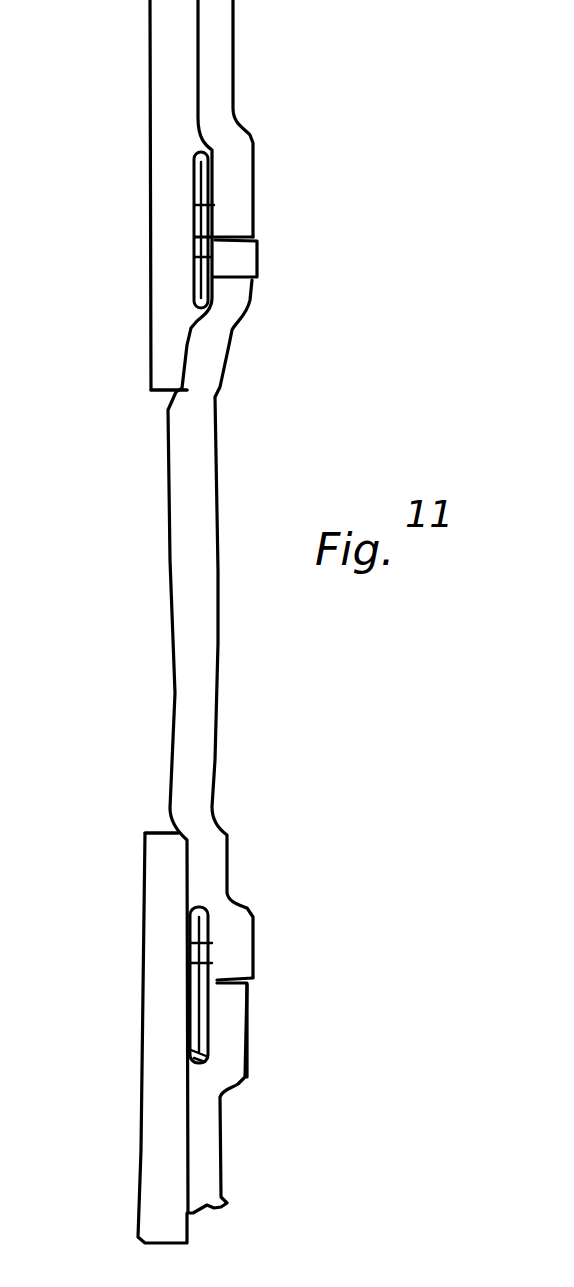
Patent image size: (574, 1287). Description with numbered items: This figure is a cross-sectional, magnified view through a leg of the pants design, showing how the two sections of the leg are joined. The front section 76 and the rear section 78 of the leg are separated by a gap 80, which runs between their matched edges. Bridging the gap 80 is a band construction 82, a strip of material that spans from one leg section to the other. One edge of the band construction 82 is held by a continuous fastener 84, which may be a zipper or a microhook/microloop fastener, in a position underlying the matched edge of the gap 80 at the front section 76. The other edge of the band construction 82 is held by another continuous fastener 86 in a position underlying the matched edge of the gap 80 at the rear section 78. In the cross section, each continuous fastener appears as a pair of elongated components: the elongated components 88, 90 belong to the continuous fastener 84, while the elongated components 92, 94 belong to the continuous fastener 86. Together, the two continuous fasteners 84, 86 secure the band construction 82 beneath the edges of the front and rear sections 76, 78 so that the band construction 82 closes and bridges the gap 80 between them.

The front section 76 is at (157, 1132).
The rear section 78 is at (168, 172).
The gap 80 is at (152, 397).
The band construction 82 is at (217, 640).
The continuous fastener 84 is at (174, 966).
The continuous fastener 86 is at (183, 258).
The elongated component 88 is at (200, 945).
The elongated component 90 is at (203, 1017).
The elongated component 92 is at (213, 203).
The elongated component 94 is at (253, 277).